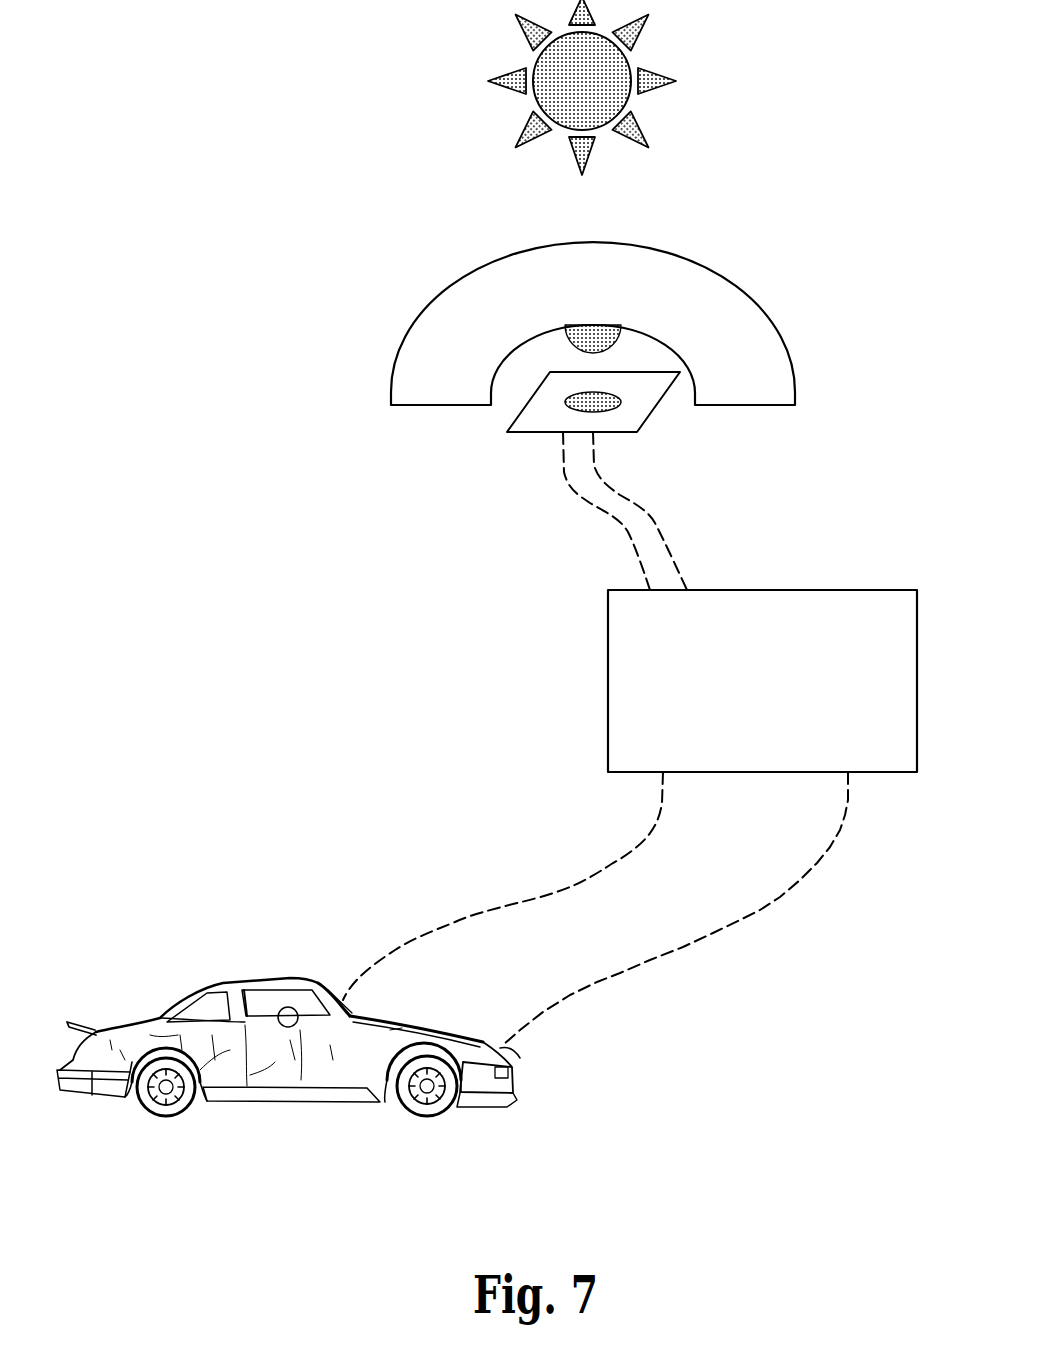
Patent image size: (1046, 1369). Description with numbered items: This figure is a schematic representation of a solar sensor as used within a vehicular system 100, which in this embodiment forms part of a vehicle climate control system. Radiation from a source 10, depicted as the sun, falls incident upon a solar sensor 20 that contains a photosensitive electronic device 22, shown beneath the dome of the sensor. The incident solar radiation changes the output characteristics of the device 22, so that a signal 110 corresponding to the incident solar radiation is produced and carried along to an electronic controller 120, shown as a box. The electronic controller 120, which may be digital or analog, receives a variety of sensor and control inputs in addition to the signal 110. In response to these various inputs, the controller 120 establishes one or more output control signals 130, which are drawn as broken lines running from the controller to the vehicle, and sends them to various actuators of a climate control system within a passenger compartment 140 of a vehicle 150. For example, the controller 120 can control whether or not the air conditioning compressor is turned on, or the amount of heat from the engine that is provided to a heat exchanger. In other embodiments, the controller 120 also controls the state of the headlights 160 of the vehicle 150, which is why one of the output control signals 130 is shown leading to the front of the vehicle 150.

The source 10 is at (632, 61).
The solar sensor 20 is at (717, 273).
The photosensitive electronic device 22 is at (625, 422).
The system 100 is at (249, 544).
The signal 110 is at (655, 508).
The electronic controller 120 is at (608, 658).
The output control signals 130 is at (467, 915).
The passenger compartment 140 is at (284, 1027).
The vehicle 150 is at (152, 956).
The headlights 160 is at (500, 1047).